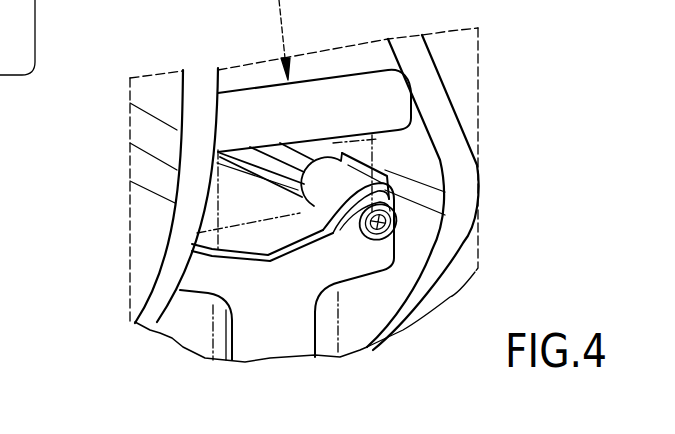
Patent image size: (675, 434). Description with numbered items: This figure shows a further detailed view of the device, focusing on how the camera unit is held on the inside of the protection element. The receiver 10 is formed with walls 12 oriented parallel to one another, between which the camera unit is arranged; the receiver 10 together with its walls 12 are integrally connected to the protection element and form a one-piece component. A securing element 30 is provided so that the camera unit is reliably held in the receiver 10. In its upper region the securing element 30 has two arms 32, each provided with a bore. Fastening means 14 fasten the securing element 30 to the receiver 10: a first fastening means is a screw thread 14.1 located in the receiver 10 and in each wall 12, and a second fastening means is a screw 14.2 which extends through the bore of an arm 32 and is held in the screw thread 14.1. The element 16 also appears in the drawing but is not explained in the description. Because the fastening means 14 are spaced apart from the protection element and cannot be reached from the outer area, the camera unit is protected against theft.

The receiver 10 is at (234, 189).
The wall 12 is at (390, 283).
The fastening means 14 is at (590, 165).
The screw thread 14.1 is at (400, 166).
The screw 14.2 is at (392, 228).
The housing wall 16 is at (142, 209).
The securing element 30 is at (268, 338).
The arm 32 is at (203, 268).